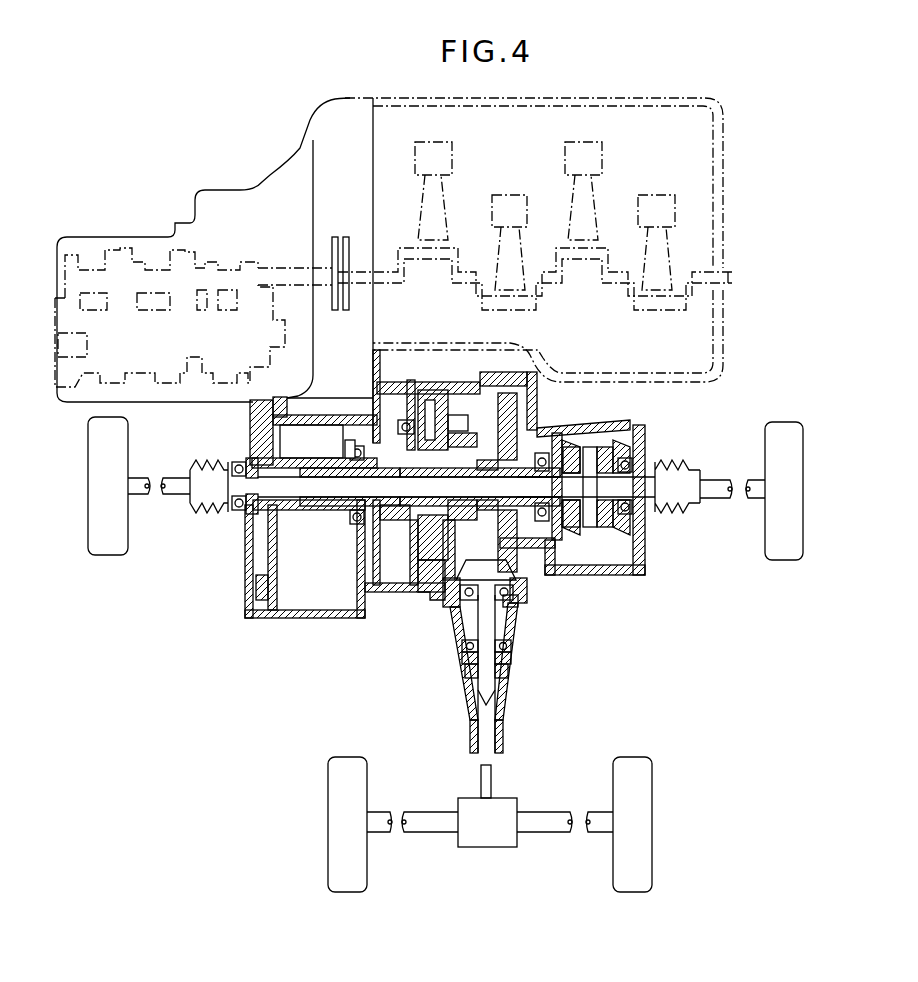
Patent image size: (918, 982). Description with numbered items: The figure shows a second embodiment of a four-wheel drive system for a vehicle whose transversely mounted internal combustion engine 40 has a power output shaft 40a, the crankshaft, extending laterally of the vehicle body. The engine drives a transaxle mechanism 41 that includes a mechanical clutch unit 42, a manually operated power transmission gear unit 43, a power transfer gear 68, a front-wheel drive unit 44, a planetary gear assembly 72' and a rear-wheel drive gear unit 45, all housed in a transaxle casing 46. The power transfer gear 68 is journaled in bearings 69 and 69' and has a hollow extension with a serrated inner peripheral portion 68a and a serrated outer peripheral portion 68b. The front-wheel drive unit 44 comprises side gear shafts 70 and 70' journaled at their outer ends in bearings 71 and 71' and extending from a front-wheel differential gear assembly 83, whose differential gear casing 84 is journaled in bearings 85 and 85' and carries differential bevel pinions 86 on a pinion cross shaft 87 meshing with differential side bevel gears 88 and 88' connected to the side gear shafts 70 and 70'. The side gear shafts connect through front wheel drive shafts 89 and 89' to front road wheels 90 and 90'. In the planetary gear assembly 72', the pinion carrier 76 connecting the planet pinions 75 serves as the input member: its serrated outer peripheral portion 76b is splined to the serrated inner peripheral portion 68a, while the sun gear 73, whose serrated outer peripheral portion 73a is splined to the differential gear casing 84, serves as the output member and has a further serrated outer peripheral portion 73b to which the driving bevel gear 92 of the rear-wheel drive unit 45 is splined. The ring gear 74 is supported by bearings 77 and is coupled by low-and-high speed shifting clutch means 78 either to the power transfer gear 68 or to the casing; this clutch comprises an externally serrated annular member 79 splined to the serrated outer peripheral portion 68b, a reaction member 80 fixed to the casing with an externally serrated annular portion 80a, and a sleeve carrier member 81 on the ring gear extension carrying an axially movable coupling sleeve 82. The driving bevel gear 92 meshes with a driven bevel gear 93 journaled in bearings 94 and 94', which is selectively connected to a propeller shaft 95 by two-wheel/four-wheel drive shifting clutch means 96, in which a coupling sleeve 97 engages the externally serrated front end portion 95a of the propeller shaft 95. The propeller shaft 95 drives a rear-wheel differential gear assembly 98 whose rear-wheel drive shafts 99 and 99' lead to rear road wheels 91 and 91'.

The internal combustion engine 40 is at (728, 302).
The power output shaft 40a is at (393, 285).
The mechanical clutch unit 42 is at (340, 233).
The manually operated power transmission gear unit 43 is at (256, 262).
The transaxle casing 46 is at (316, 148).
The transaxle mechanism 41 is at (215, 585).
The front-wheel drive unit 44 is at (680, 562).
The rear-wheel drive gear unit 45 is at (528, 622).
The power transfer gear 68 is at (275, 615).
The serrated inner peripheral portion 68a is at (350, 487).
The serrated outer peripheral portion 68b is at (311, 441).
The bearing 69 is at (230, 503).
The bearing 69' is at (338, 501).
The side gear shaft 70 is at (409, 508).
The side gear shaft 70' is at (631, 507).
The bearing 71 is at (209, 471).
The bearing 71' is at (684, 474).
The planetary gear assembly 72' is at (487, 378).
The sun gear 73 is at (478, 522).
The serrated outer peripheral portion 73a is at (534, 486).
The serrated outer peripheral portion 73b is at (520, 528).
The ring gear 74 is at (462, 430).
The planet pinions 75 is at (468, 445).
The pinion carrier 76 is at (444, 412).
The serrated outer peripheral portion 76b is at (476, 487).
The bearings 77 is at (425, 580).
The low-and-high speed shifting clutch means 78 is at (380, 425).
The externally serrated annular member 79 is at (378, 520).
The reaction member 80 is at (405, 400).
The externally serrated annular portion 80a is at (405, 418).
The sleeve carrier member 81 is at (405, 471).
The coupling sleeve 82 is at (372, 540).
The front-wheel differential gear assembly 83 is at (558, 577).
The differential gear casing 84 is at (630, 435).
The bearing 85 is at (533, 465).
The bearing 85' is at (650, 466).
The differential bevel pinions 86 is at (568, 447).
The pinion cross shaft 87 is at (605, 447).
The differential side bevel gear 88 is at (596, 507).
The differential side bevel gear 88' is at (615, 528).
The front wheel drive shaft 89 is at (167, 472).
The front wheel drive shaft 89' is at (724, 472).
The front road wheel 90 is at (125, 486).
The front road wheel 90' is at (768, 491).
The rear road wheel 91 is at (360, 804).
The rear road wheel 91' is at (619, 804).
The driving bevel gear 92 is at (522, 588).
The driven bevel gear 93 is at (458, 593).
The bearing 94 is at (463, 638).
The bearing 94' is at (463, 654).
The propeller shaft 95 is at (493, 775).
The externally serrated front end portion 95a is at (470, 685).
The two-wheel/four-wheel drive shifting clutch means 96 is at (500, 675).
The coupling sleeve 97 is at (462, 670).
The rear-wheel differential gear assembly 98 is at (486, 848).
The rear-wheel drive shaft 99 is at (430, 839).
The rear-wheel drive shaft 99' is at (544, 839).